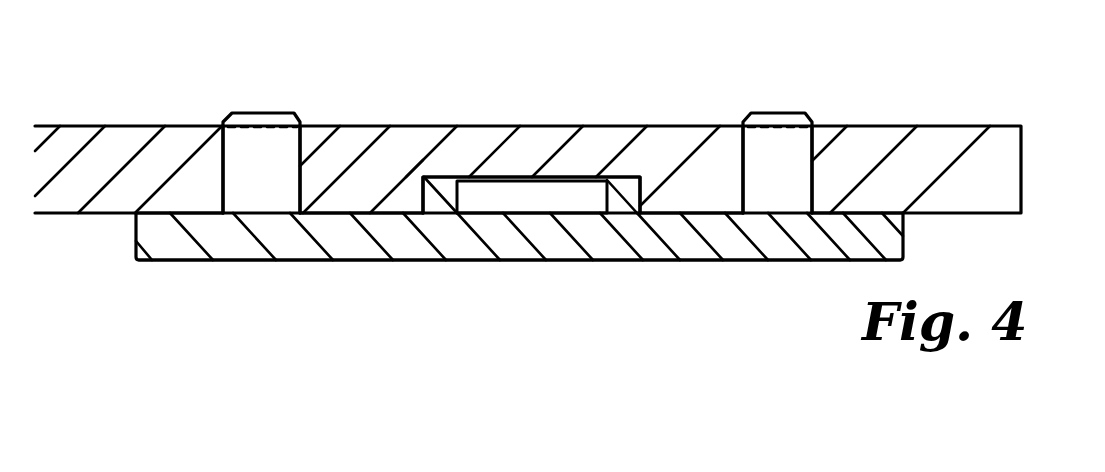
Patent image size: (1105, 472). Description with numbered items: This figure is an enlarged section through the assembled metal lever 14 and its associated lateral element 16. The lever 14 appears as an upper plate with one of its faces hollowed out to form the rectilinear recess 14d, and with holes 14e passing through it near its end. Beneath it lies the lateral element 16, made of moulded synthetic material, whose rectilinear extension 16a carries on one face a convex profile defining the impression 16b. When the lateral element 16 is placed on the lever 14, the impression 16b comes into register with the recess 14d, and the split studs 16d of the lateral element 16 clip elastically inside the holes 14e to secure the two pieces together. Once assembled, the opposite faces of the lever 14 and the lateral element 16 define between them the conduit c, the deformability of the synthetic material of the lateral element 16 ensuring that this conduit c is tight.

The metal lever 14 is at (950, 140).
The recess 14d is at (587, 176).
The holes 14e is at (220, 153).
The lateral element 16 is at (358, 266).
The rectilinear extension 16a is at (168, 245).
The impression 16b is at (592, 208).
The split studs 16d is at (265, 143).
The conduit c is at (538, 201).